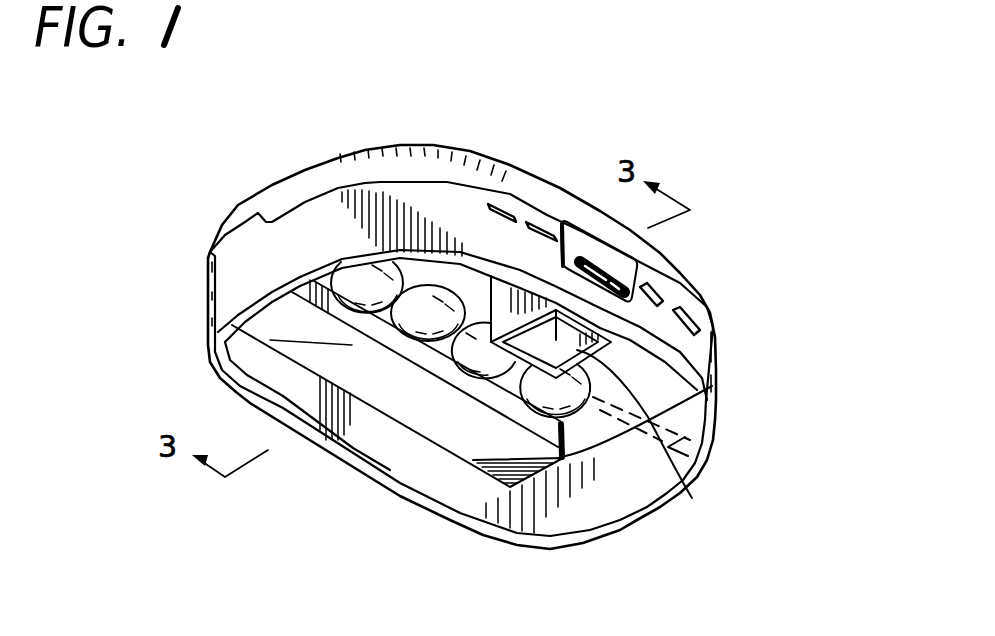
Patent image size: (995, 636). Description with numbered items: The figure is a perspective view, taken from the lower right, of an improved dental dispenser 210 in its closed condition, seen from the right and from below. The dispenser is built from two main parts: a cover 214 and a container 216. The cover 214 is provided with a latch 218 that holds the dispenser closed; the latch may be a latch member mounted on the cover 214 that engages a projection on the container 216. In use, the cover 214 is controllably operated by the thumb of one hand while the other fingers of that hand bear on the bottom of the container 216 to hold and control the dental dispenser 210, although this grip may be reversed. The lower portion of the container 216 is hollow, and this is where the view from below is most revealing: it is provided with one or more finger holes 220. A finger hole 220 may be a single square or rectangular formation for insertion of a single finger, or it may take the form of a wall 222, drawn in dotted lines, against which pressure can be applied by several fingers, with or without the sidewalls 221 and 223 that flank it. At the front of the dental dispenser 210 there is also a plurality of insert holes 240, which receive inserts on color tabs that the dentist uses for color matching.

The dental dispenser 210 is at (556, 153).
The cover 214 is at (380, 143).
The container 216 is at (702, 345).
The latch 218 is at (637, 267).
The insert holes 240 is at (703, 318).
The finger hole 220 is at (692, 498).
The sidewall 221 is at (437, 377).
The wall 222 is at (700, 437).
The sidewall 223 is at (497, 411).